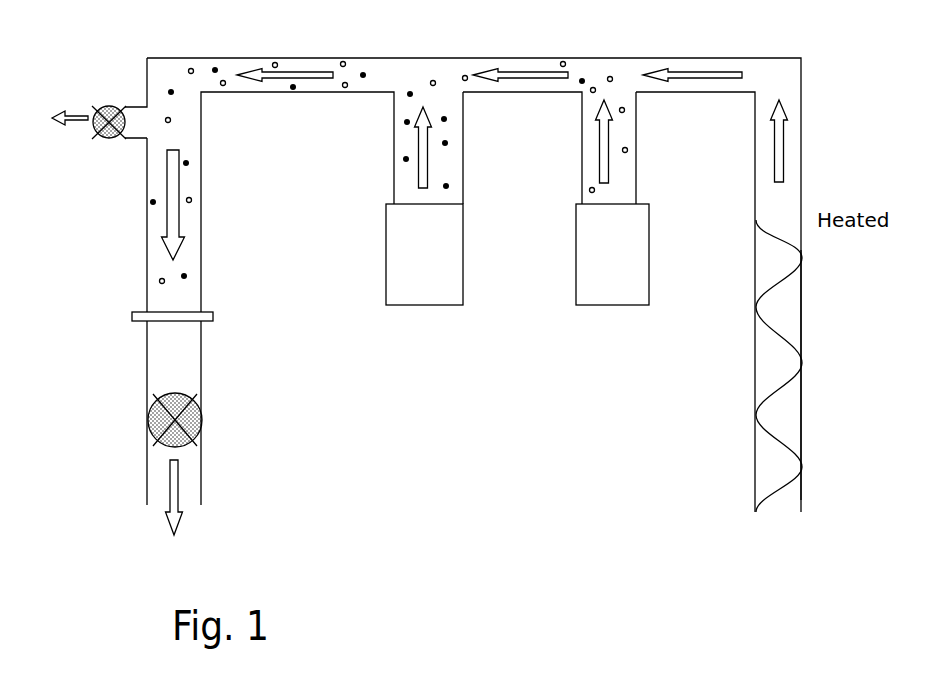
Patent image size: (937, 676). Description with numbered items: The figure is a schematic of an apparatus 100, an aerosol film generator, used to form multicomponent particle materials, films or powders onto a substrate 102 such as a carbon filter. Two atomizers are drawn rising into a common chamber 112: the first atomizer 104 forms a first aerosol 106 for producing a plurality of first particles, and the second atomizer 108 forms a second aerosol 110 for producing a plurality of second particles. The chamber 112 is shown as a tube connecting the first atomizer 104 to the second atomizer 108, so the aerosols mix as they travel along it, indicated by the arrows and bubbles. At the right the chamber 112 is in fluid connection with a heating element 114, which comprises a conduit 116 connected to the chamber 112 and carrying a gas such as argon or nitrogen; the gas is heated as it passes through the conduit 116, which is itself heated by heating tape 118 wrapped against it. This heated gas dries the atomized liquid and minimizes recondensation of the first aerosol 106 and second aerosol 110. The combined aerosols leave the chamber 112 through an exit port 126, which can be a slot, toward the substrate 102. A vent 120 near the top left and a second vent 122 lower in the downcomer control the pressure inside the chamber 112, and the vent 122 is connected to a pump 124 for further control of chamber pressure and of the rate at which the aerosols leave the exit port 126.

The apparatus 100 is at (113, 56).
The substrate 102 is at (135, 312).
The first atomizer 104 is at (612, 206).
The first aerosol 106 is at (595, 73).
The second atomizer 108 is at (424, 269).
The second aerosol 110 is at (439, 100).
The chamber 112 is at (312, 65).
The heating element 114 is at (790, 93).
The conduit 116 is at (798, 308).
The heating tape 118 is at (803, 373).
The vent 120 is at (100, 140).
The vent 122 is at (150, 413).
The pump 124 is at (156, 514).
The exit port 126 is at (147, 228).